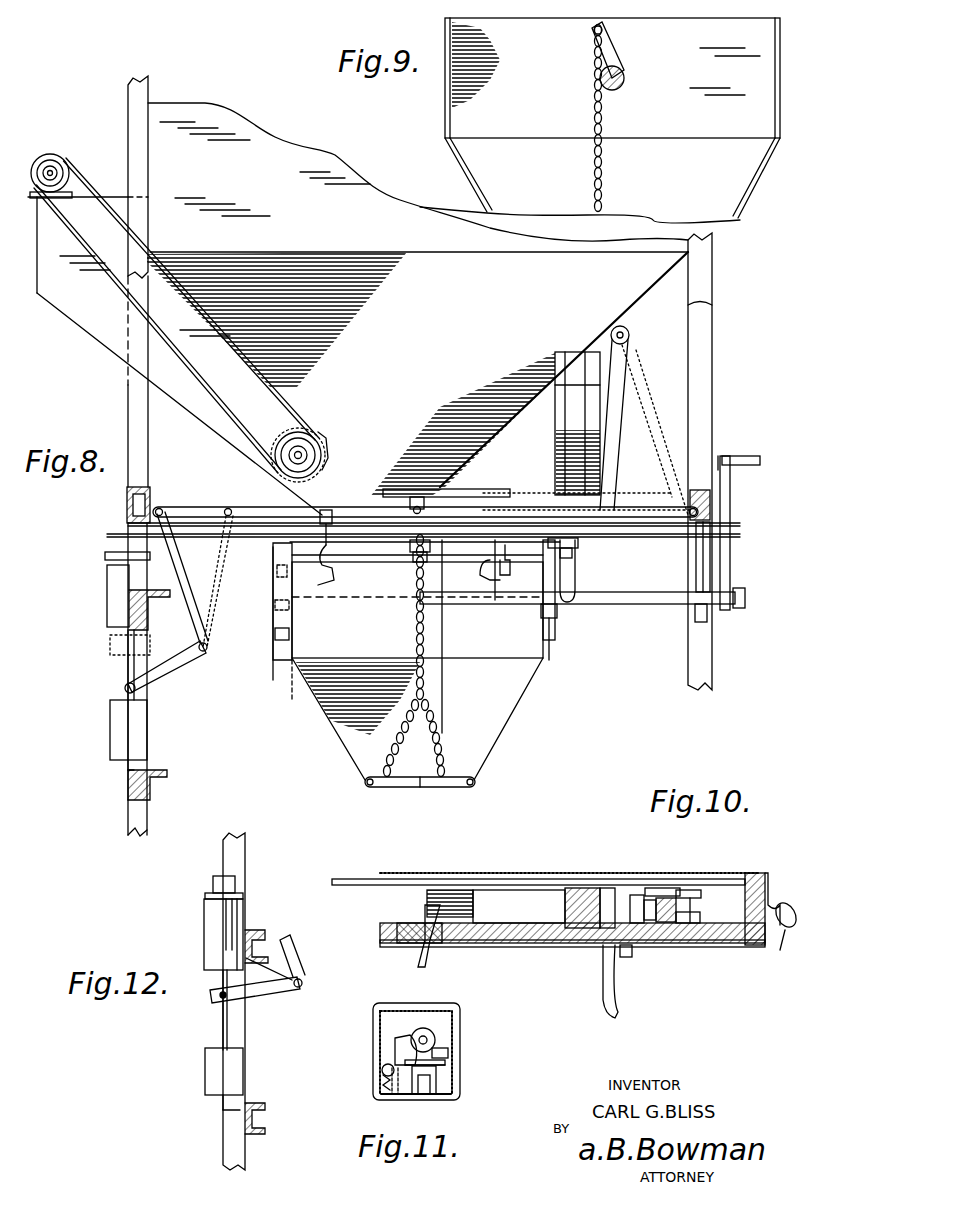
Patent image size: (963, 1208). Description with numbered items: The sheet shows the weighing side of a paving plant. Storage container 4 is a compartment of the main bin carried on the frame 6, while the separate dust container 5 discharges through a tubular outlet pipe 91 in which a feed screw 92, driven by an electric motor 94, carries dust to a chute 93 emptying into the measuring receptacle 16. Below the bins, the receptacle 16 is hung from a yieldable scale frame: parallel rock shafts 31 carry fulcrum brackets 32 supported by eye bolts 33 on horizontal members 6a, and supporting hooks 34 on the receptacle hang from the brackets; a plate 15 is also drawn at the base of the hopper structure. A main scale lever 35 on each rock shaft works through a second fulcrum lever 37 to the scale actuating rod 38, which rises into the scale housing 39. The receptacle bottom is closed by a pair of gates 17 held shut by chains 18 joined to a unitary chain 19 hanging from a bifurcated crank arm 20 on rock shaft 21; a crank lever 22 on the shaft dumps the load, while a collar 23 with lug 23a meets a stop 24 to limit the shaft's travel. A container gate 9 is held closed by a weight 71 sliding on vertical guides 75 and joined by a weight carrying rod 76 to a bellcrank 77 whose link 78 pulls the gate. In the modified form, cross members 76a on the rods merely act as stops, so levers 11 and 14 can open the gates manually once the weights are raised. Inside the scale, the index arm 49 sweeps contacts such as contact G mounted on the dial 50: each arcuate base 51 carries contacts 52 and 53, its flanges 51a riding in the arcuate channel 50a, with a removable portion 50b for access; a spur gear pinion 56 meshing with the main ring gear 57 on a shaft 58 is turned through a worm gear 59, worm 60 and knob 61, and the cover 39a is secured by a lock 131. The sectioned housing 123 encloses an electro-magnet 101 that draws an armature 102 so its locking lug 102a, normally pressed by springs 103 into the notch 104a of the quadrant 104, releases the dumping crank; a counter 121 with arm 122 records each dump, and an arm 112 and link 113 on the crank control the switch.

In FIG. 8, the storage container 4 is at (374, 300).
In FIG. 8, the dust container 5 is at (200, 408).
In FIG. 8, the frame 6 is at (128, 392).
In FIG. 8, the horizontal members 6a is at (712, 495).
In FIG. 8, the gate 9 is at (442, 545).
In FIG. 8, the lever 11 is at (273, 551).
In FIG. 8, the lever 14 is at (615, 430).
In FIG. 8, the plate 15 is at (465, 505).
In FIG. 9, the measuring receptacle 16 is at (446, 100).
In FIG. 8, the measuring receptacle 16 is at (515, 665).
In FIG. 8, the gates 17 is at (407, 788).
In FIG. 8, the chains 18 is at (405, 712).
In FIG. 9, the unitary chain 19 is at (595, 158).
In FIG. 8, the unitary chain 19 is at (424, 640).
In FIG. 9, the crank arm 20 is at (617, 66).
In FIG. 8, the crank arm 20 is at (448, 608).
In FIG. 9, the rock shaft 21 is at (622, 88).
In FIG. 8, the rock shaft 21 is at (330, 608).
In FIG. 11, the rock shaft 21 is at (412, 1033).
In FIG. 8, the crank lever 22 is at (730, 552).
In FIG. 8, the collar 23 is at (549, 640).
In FIG. 8, the extended lug 23a is at (545, 598).
In FIG. 8, the stop 24 is at (553, 620).
In FIG. 8, the rock shafts 31 is at (385, 590).
In FIG. 8, the fulcrum brackets 32 is at (328, 585).
In FIG. 8, the eye bolts 33 is at (395, 518).
In FIG. 8, the supporting hooks 34 is at (500, 605).
In FIG. 8, the main scale lever 35 is at (576, 565).
In FIG. 8, the second fulcrum lever 37 is at (556, 556).
In FIG. 8, the scale actuating rod 38 is at (580, 543).
In FIG. 8, the scale housing 39 is at (570, 430).
In FIG. 10, the scale housing 39 is at (738, 942).
In FIG. 10, the cover 39a is at (765, 872).
In FIG. 10, the index arm 49 is at (432, 890).
In FIG. 10, the dial 50 is at (705, 942).
In FIG. 10, the arcuate channel 50a is at (645, 945).
In FIG. 10, the removable portion 50b is at (520, 935).
In FIG. 10, the arcuate base 51 is at (565, 910).
In FIG. 10, the flanges 51a is at (560, 935).
In FIG. 10, the arcuate contact 52 is at (615, 900).
In FIG. 10, the arcuate contact 53 is at (600, 890).
In FIG. 10, the spur gear pinion 56 is at (675, 915).
In FIG. 10, the main ring gear 57 is at (700, 925).
In FIG. 10, the shaft 58 is at (700, 893).
In FIG. 10, the worm gear 59 is at (637, 905).
In FIG. 10, the worm 60 is at (655, 905).
In FIG. 10, the knob 61 is at (676, 905).
In FIG. 8, the weight 71 is at (118, 742).
In FIG. 8, the vertical guides 75 is at (127, 778).
In FIG. 8, the weight carrying rod 76 is at (125, 655).
In FIG. 12, the weight carrying rod 76 is at (223, 1032).
In FIG. 12, the cross member 76a is at (221, 996).
In FIG. 8, the bellcrank 77 is at (165, 660).
In FIG. 12, the bellcrank 77 is at (276, 1000).
In FIG. 8, the link 78 is at (200, 517).
In FIG. 8, the tubular outlet pipe 91 is at (268, 450).
In FIG. 8, the feed screw 92 is at (310, 428).
In FIG. 8, the chute 93 is at (330, 465).
In FIG. 8, the electric motor 94 is at (62, 160).
In FIG. 8, the electro-magnet 101 is at (287, 672).
In FIG. 11, the electro-magnet 101 is at (428, 1096).
In FIG. 8, the armature 102 is at (275, 633).
In FIG. 11, the armature 102 is at (452, 1063).
In FIG. 11, the locking lug 102a is at (442, 1040).
In FIG. 11, the springs 103 is at (455, 1085).
In FIG. 8, the quadrant 104 is at (275, 606).
In FIG. 11, the quadrant 104 is at (398, 1043).
In FIG. 11, the notch 104a is at (388, 1062).
In FIG. 8, the arm 112 is at (696, 614).
In FIG. 8, the link 113 is at (707, 615).
In FIG. 11, the counter 121 is at (390, 1080).
In FIG. 11, the arm 122 is at (383, 1090).
In FIG. 8, the housing 123 is at (272, 650).
In FIG. 10, the housing 123 is at (398, 1010).
In FIG. 11, the housing 123 is at (392, 1006).
In FIG. 10, the lock 131 is at (788, 924).
In FIG. 10, the contact G is at (425, 915).